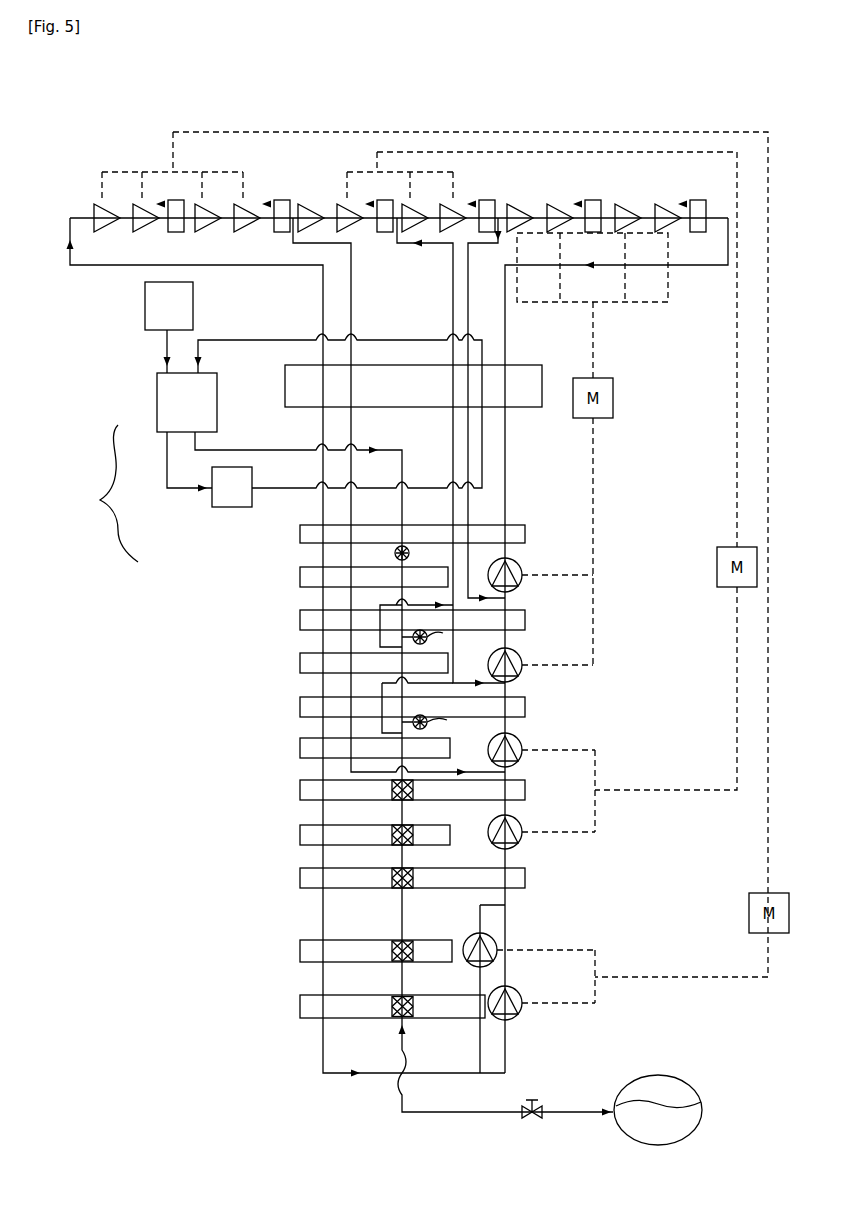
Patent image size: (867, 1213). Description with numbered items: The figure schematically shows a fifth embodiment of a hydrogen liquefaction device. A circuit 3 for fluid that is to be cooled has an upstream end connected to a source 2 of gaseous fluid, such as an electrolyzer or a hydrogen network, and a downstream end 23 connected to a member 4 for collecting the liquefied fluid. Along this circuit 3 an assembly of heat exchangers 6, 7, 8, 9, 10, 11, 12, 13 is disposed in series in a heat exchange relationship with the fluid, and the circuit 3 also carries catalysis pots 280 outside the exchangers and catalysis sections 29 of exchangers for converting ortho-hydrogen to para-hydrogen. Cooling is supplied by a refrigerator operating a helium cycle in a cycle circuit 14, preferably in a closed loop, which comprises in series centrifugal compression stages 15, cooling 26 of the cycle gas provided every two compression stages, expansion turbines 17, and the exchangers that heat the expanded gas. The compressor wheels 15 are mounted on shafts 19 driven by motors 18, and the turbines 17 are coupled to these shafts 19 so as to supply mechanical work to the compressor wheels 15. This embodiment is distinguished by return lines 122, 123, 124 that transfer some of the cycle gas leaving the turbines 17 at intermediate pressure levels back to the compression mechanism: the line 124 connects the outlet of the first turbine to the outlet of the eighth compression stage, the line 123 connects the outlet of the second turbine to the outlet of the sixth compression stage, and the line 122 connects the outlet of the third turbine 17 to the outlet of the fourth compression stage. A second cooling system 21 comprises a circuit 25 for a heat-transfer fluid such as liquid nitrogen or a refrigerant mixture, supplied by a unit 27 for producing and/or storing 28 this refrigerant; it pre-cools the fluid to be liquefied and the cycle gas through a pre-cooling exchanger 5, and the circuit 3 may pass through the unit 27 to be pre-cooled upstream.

The source 2 is at (147, 300).
The circuit for fluid that is to be cooled 3 is at (405, 465).
The member for collecting the liquefied fluid 4 is at (683, 1128).
The pre-cooling exchanger 5 is at (290, 380).
The heat exchanger 6 is at (300, 534).
The heat exchanger 7 is at (300, 576).
The heat exchanger 8 is at (300, 620).
The heat exchanger 9 is at (300, 663).
The heat exchanger 10 is at (300, 707).
The heat exchanger 11 is at (300, 748).
The heat exchanger 12 is at (300, 790).
The heat exchanger 13 is at (300, 835).
The cycle circuit 14 is at (508, 462).
The compression stages 15 is at (122, 232).
The turbines 17 is at (520, 652).
The motor 18 is at (613, 398).
The shaft 19 is at (598, 360).
The second cooling system 21 is at (108, 493).
The downstream end 23 is at (606, 1118).
The circuit for heat-transfer fluid 25 is at (190, 489).
The cooling of the cycle gas 26 is at (178, 200).
The unit for producing and/or storing refrigerant 27 is at (172, 418).
The storing 28 is at (212, 502).
The section of exchanger 29 is at (414, 823).
The return line 122 is at (352, 291).
The return line 123 is at (452, 283).
The return line 124 is at (466, 298).
The catalysis pot 280 is at (410, 554).